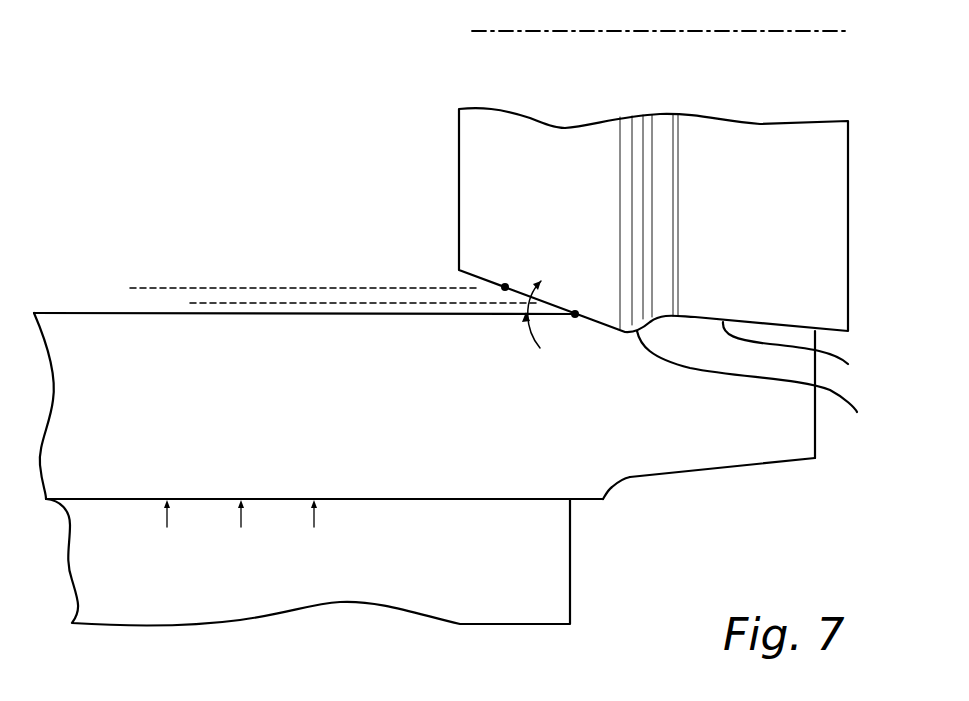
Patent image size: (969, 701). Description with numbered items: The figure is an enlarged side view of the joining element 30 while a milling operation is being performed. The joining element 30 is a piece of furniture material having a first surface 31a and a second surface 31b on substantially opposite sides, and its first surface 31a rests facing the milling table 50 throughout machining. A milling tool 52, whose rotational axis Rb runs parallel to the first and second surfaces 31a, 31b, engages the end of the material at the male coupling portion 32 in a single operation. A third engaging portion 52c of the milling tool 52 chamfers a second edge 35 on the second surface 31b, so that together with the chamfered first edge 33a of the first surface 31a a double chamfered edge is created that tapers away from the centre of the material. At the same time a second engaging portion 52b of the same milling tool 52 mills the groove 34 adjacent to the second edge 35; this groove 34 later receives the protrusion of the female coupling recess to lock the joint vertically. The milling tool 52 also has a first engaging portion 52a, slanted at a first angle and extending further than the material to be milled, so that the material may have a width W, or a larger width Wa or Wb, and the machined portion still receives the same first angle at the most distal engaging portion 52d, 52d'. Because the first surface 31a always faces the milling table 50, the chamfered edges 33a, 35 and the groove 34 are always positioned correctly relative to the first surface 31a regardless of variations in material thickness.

The joining element 30 is at (67, 313).
The first surface 31a is at (415, 513).
The second surface 31b is at (86, 304).
The leading end face of strip 32 is at (815, 428).
The first engaging portion 33a is at (697, 470).
The groove 34 is at (759, 388).
The second edge 35 is at (804, 358).
The milling table 50 is at (308, 562).
The milling tool 52 is at (800, 160).
The first engaging portion 52a is at (478, 279).
The second engaging portion 52b is at (637, 331).
The third engaging portion 52c is at (763, 323).
The most distal engaging portion 52d is at (553, 273).
The most distal engaging portion 52d' is at (506, 241).
The rotational axis Rb is at (513, 32).
The width W is at (314, 306).
The width Wa is at (241, 297).
The width Wb is at (165, 282).